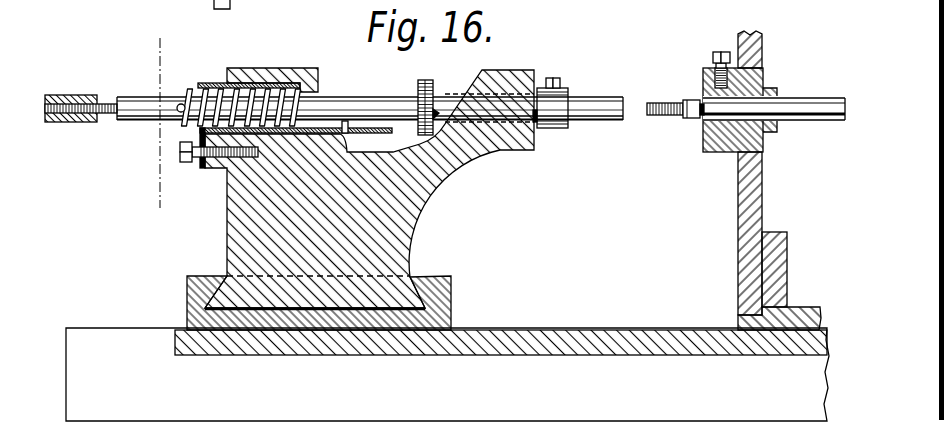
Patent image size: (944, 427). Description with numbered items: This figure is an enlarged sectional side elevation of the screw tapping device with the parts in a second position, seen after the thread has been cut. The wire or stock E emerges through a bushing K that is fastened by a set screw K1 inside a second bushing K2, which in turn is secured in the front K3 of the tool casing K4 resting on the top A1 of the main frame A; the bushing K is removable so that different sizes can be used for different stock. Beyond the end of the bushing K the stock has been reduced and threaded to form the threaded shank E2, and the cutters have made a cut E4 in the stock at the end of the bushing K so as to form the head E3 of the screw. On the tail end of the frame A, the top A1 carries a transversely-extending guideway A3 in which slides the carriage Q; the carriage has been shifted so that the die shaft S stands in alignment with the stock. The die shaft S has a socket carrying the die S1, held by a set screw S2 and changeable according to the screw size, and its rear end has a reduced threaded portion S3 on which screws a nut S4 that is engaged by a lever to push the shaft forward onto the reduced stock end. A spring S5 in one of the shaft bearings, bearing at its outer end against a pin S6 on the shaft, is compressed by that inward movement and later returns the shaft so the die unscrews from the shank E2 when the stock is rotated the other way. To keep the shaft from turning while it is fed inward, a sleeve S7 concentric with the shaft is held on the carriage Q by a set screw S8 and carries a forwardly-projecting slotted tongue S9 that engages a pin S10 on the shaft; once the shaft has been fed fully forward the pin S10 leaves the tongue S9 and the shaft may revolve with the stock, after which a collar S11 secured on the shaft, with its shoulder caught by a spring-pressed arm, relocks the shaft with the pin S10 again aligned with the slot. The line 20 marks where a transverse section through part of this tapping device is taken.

The main frame A is at (447, 374).
The top of the main frame A1 is at (501, 330).
The guideway A3 is at (335, 303).
The carriage Q is at (232, 223).
The die shaft S is at (397, 97).
The die S1 is at (598, 119).
The set screw S2 is at (555, 75).
The reduced threaded portion S3 is at (102, 100).
The nut S4 is at (63, 86).
The spring S5 is at (264, 92).
The pin S6 is at (181, 104).
The sleeve S7 is at (226, 135).
The set screw S8 is at (179, 153).
The slotted tongue S9 is at (346, 133).
The pin S10 is at (345, 121).
The collar S11 is at (432, 90).
The section line 20 is at (156, 125).
The bushing K is at (776, 100).
The set screw K1 is at (717, 52).
The bushing K2 is at (714, 153).
The front of the tool casing K3 is at (763, 49).
The tool casing K4 is at (779, 241).
The stock E is at (822, 121).
The threaded shank E2 is at (657, 116).
The head E3 is at (690, 100).
The cut E4 is at (700, 118).